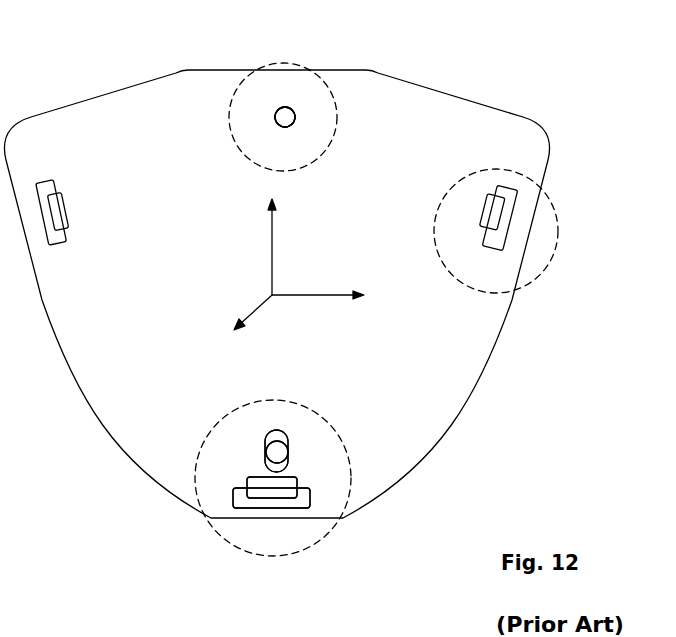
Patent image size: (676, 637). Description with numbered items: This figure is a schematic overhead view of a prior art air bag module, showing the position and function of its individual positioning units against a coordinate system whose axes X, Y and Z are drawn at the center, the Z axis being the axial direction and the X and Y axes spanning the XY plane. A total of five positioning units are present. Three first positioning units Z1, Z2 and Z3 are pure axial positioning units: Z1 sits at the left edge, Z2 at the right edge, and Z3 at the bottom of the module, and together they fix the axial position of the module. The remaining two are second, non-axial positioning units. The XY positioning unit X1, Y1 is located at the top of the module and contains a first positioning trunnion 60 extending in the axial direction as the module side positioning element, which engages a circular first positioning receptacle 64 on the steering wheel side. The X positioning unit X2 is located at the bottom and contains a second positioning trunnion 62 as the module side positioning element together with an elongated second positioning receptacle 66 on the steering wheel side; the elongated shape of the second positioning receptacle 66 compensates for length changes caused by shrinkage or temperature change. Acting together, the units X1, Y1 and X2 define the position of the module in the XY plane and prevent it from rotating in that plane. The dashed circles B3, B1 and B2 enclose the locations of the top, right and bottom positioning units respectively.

The first positioning trunnion 60 is at (282, 113).
The second positioning trunnion 62 is at (274, 448).
The first positioning receptacle 64 is at (277, 109).
The second positioning receptacle 66 is at (270, 432).
The sensor region B1 is at (542, 249).
The sensor region B2 is at (302, 533).
The sensor region B3 is at (302, 78).
The XY positioning unit X1 is at (301, 108).
The XY positioning unit Y1 is at (300, 123).
The X positioning unit X2 is at (297, 451).
The first positioning unit Z1 is at (58, 225).
The first positioning unit Z2 is at (496, 231).
The first positioning unit Z3 is at (289, 494).
The coordinate axis X is at (283, 244).
The coordinate axis Y is at (318, 285).
The coordinate axis Z is at (250, 312).